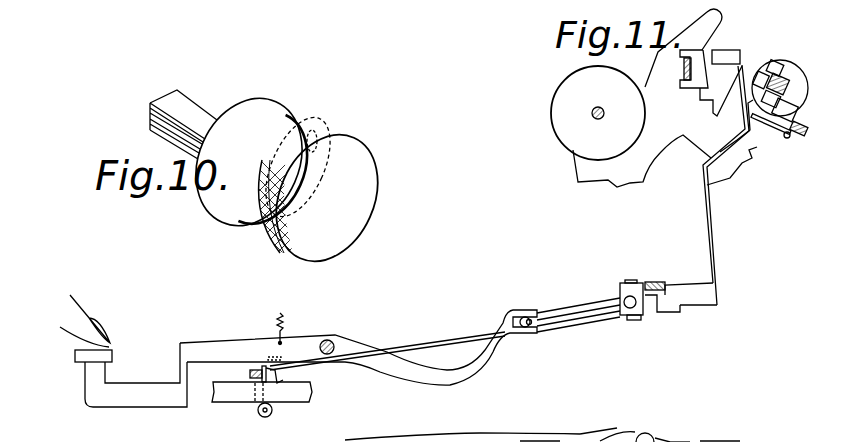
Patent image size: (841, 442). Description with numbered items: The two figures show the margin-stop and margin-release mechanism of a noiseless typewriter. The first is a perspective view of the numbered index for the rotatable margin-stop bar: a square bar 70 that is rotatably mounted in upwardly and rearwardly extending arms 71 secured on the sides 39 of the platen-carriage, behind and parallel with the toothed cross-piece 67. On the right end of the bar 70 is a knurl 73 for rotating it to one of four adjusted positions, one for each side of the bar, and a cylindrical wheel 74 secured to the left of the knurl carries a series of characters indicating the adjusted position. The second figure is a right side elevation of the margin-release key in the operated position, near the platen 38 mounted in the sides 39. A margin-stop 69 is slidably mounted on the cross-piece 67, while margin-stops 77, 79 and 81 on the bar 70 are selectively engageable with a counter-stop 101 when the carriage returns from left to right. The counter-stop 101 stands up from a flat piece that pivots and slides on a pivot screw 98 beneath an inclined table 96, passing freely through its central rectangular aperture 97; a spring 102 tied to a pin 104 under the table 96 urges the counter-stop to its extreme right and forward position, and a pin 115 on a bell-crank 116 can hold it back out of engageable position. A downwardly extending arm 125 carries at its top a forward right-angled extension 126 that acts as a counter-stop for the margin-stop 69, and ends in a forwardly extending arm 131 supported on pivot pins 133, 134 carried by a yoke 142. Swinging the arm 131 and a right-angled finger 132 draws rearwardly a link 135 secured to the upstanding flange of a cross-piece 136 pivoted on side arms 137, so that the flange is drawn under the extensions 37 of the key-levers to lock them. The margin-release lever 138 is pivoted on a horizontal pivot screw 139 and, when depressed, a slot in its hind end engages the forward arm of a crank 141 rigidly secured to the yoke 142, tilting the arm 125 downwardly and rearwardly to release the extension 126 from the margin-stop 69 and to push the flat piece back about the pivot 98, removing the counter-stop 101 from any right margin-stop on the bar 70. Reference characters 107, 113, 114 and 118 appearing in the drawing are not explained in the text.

In FIG. 10, the bar 70 is at (192, 102).
In FIG. 11, the bar 70 is at (781, 71).
In FIG. 10, the cylindrical wheel 74 is at (293, 113).
In FIG. 10, the knurl 73 is at (350, 146).
In FIG. 11, the platen 38 is at (560, 137).
In FIG. 11, the sides 39 is at (663, 148).
In FIG. 11, the cross-piece 67 is at (683, 70).
In FIG. 11, the margin-stop 69 is at (708, 74).
In FIG. 11, the forward right-angled extension 126 is at (725, 57).
In FIG. 11, the arm 125 is at (714, 214).
In FIG. 11, the arms 71 is at (781, 50).
In FIG. 11, the margin-stop 79 is at (761, 72).
In FIG. 11, the margin-stop 81 is at (785, 68).
In FIG. 11, the margin-stop 77 is at (783, 97).
In FIG. 11, the counter-stop 101 is at (797, 117).
In FIG. 11, the pivot screw 98 is at (763, 130).
In FIG. 11, the spring 102 is at (791, 139).
In FIG. 11, the margin-release lever 138 is at (204, 344).
In FIG. 11, the pivot screw 139 is at (331, 341).
In FIG. 11, the extensions 37 is at (269, 357).
In FIG. 11, the cross-piece 136 is at (268, 385).
In FIG. 11, the side arms 137 is at (261, 414).
In FIG. 11, the link 135 is at (437, 343).
In FIG. 11, the crank 141 is at (557, 313).
In FIG. 11, the yoke 142 is at (623, 284).
In FIG. 11, the pivot pin 134 is at (630, 281).
In FIG. 11, the pivot pin 133 is at (635, 321).
In FIG. 11, the right-angled finger 132 is at (665, 313).
In FIG. 11, the forwardly extending arm 131 is at (709, 301).
In FIG. 11, the table 96 is at (350, 439).
In FIG. 11, the pin 104 is at (483, 440).
In FIG. 11, the aperture 97 is at (531, 441).
In FIG. 11, the member 107 is at (582, 440).
In FIG. 11, the member 113 is at (619, 432).
In FIG. 11, the pin 115 is at (645, 436).
In FIG. 11, the member 114 is at (656, 437).
In FIG. 11, the member 118 is at (720, 435).
In FIG. 11, the bell-crank 116 is at (682, 440).